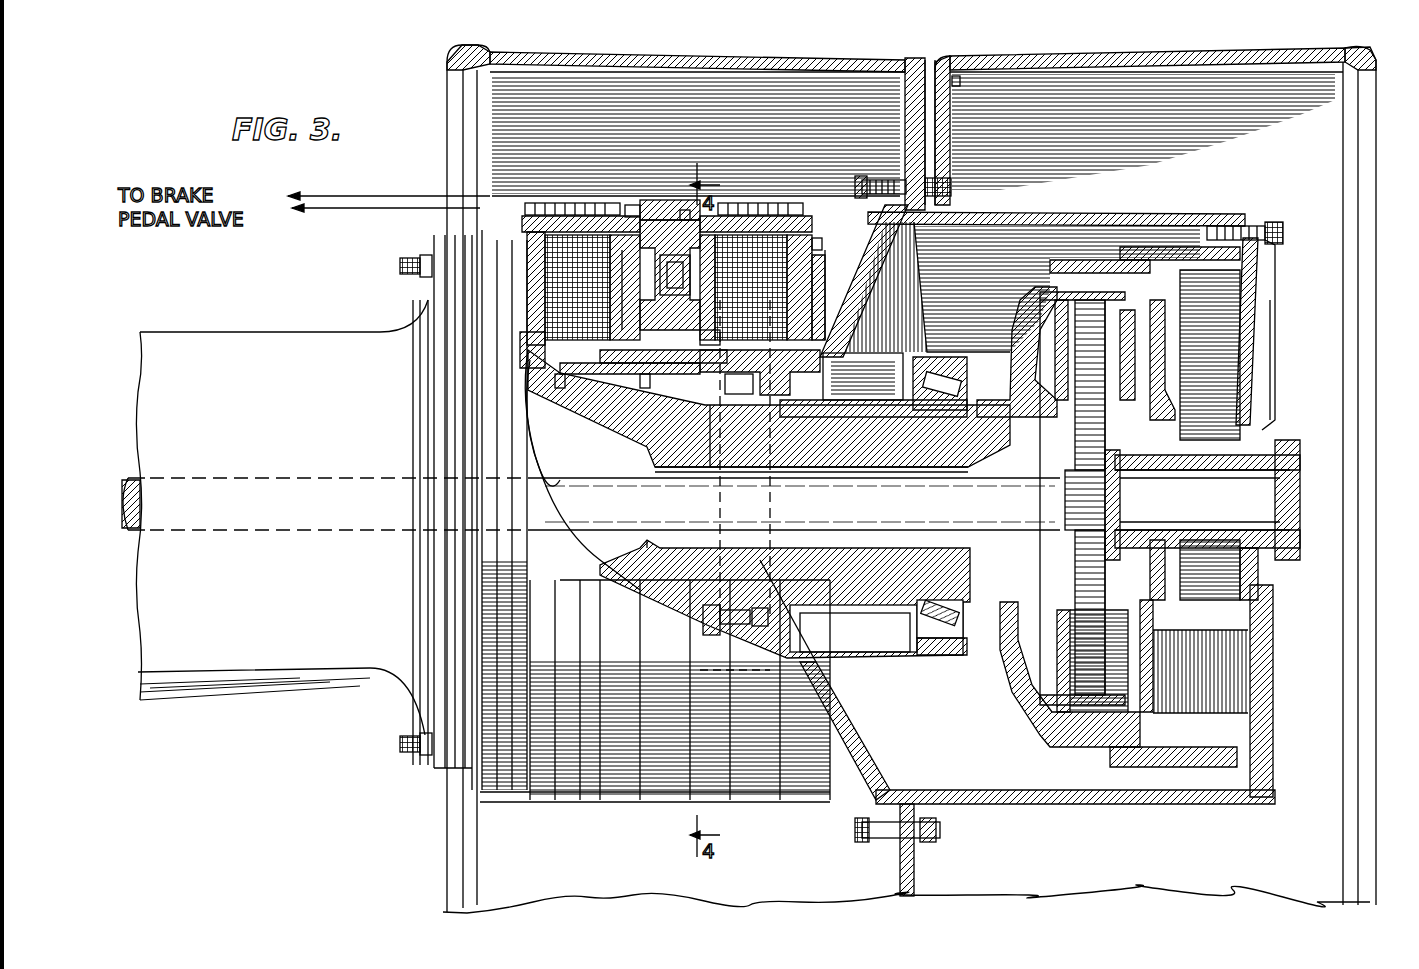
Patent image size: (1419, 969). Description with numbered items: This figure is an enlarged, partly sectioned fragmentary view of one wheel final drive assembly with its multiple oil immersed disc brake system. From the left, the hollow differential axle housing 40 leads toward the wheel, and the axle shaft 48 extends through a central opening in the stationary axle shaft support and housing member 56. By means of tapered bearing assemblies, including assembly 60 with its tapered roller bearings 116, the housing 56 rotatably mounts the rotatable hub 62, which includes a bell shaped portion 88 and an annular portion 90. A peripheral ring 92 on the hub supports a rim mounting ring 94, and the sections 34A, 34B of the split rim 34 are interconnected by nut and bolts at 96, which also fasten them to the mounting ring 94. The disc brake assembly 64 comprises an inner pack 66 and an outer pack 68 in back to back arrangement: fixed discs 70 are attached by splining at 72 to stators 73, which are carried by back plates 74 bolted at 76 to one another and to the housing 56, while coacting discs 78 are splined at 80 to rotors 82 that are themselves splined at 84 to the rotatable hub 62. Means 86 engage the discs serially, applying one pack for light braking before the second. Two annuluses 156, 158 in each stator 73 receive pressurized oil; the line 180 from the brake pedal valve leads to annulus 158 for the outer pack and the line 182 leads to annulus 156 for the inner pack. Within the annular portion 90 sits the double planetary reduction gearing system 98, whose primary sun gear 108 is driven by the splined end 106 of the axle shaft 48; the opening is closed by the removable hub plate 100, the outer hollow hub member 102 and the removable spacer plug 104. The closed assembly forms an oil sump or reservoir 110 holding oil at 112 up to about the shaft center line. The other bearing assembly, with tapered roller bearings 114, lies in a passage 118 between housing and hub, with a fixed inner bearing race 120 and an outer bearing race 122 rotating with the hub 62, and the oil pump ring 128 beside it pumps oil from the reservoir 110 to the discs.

The split rim 34 is at (890, 50).
The split rim section 34A is at (552, 56).
The split rim section 34B is at (1112, 56).
The hollow differential axle housing 40 is at (222, 333).
The axle shaft 48 is at (840, 507).
The axle shaft support and housing member 56 is at (833, 444).
The tapered bearing assembly 60 is at (972, 625).
The rotatable hub 62 is at (842, 725).
The disc brake assembly 64 is at (760, 188).
The inner brake disc pack 66 is at (608, 238).
The outer brake disc pack 68 is at (818, 250).
The fixed disc 70 is at (645, 225).
The splining 72 is at (545, 232).
The stator 73 is at (575, 235).
The back plate 74 is at (515, 248).
The bolt 76 is at (482, 226).
The coacting disc 78 is at (540, 340).
The splining 80 is at (610, 345).
The rotor 82 is at (620, 365).
The splining 84 is at (650, 385).
The disc engaging means 86 is at (660, 215).
The bell shaped portion 88 is at (860, 730).
The annular portion 90 is at (1072, 214).
The peripheral ring 92 is at (878, 228).
The rim mounting ring 94 is at (890, 200).
The nut and bolts 96 is at (958, 70).
The double planetary reduction gearing system 98 is at (1262, 606).
The removable hub plate 100 is at (1262, 262).
The outer hollow hub member 102 is at (1270, 570).
The removable spacer plug 104 is at (1278, 478).
The splined end 106 is at (1072, 496).
The primary sun gear 108 is at (1058, 568).
The oil sump or reservoir 110 is at (1025, 790).
The lubricating and cooling oil 112 is at (996, 766).
The tapered roller bearing 114 is at (735, 636).
The tapered roller bearing 116 is at (938, 652).
The passage 118 is at (680, 378).
The inner bearing race 120 is at (745, 460).
The outer bearing race 122 is at (748, 392).
The oil pump ring 128 is at (853, 628).
The annulus 156 is at (632, 205).
The annulus 158 is at (670, 220).
The hydraulic line 180 is at (345, 196).
The hydraulic line 182 is at (370, 209).